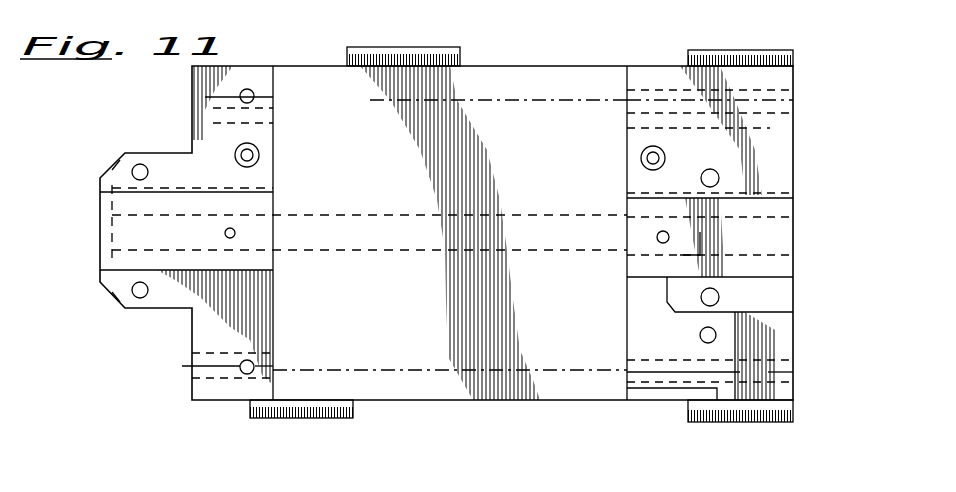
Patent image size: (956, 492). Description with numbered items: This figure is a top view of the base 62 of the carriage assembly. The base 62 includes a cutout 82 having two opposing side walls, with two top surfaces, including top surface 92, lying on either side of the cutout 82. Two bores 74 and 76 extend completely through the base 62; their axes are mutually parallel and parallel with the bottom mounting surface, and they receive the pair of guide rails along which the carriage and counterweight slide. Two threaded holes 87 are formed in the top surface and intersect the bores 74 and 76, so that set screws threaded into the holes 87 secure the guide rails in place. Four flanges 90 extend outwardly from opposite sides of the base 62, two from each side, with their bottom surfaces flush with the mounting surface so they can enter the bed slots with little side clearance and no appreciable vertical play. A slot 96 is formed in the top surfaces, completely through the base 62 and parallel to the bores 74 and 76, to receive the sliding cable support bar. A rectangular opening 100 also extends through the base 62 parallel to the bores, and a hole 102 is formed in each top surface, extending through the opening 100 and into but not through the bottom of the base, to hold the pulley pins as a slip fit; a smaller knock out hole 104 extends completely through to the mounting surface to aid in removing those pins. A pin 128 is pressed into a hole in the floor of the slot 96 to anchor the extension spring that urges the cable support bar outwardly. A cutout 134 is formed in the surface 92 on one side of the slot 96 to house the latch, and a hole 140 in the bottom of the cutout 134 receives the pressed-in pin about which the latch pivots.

The base 62 is at (530, 62).
The bore 74 is at (195, 358).
The bore 76 is at (200, 88).
The cutout 82 is at (433, 358).
The threaded hole 87 is at (248, 93).
The flange 90 is at (420, 47).
The top surface 92 is at (762, 285).
The slot 96 is at (135, 253).
The rectangular opening 100 is at (175, 170).
The hole 102 is at (248, 152).
The knock out hole 104 is at (247, 157).
The pin 128 is at (232, 240).
The cutout 134 is at (762, 328).
The hole 140 is at (700, 335).